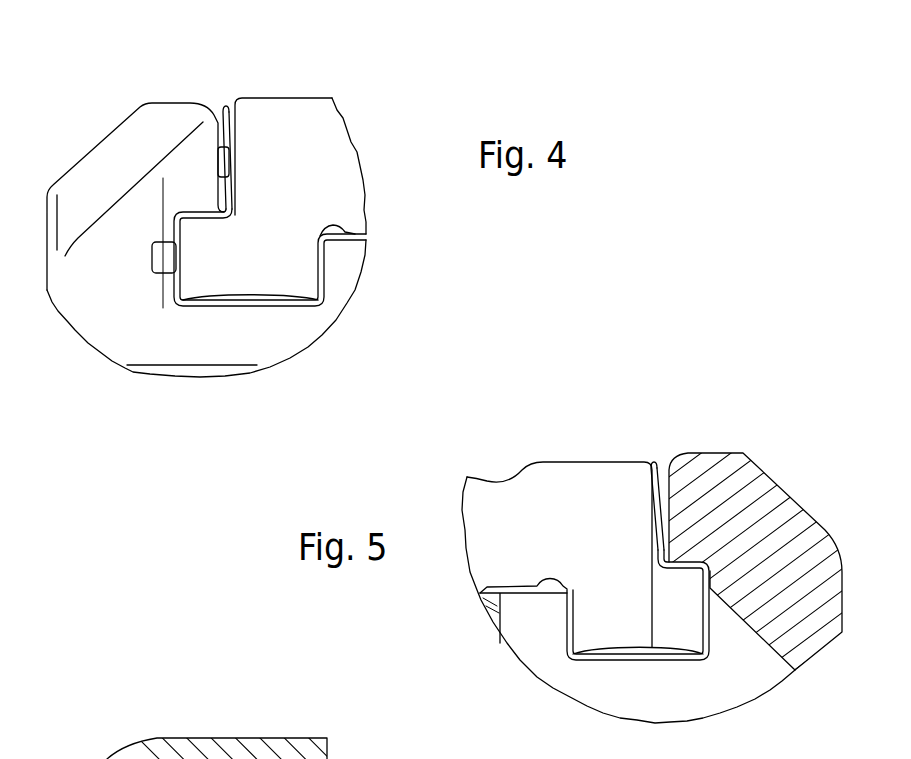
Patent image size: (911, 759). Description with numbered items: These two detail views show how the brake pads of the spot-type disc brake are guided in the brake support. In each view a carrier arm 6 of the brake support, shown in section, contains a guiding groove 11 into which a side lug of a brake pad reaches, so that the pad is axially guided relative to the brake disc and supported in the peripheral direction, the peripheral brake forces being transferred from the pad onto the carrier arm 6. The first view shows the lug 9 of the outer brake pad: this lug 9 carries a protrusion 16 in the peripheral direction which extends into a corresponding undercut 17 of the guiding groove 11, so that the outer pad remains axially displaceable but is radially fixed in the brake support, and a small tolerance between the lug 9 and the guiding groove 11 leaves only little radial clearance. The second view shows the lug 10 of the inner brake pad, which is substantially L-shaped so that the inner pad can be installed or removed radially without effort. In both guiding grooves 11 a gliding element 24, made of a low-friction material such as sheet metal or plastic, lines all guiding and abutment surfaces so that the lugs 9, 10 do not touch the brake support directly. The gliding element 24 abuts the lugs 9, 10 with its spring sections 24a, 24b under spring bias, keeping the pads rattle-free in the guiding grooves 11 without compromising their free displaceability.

In FIG. 4, the carrier arm 6 is at (88, 192).
In FIG. 5, the carrier arm 6 is at (765, 527).
In FIG. 4, the lug 9 is at (292, 179).
In FIG. 5, the lug 10 is at (601, 527).
In FIG. 4, the guiding groove 11 is at (226, 95).
In FIG. 5, the guiding groove 11 is at (687, 652).
In FIG. 4, the protrusion 16 is at (193, 263).
In FIG. 4, the undercut 17 is at (160, 230).
In FIG. 4, the gliding element 24 is at (175, 283).
In FIG. 5, the gliding element 24 is at (713, 623).
In FIG. 4, the spring section 24a is at (218, 118).
In FIG. 5, the spring section 24a is at (664, 480).
In FIG. 4, the spring section 24b is at (247, 298).
In FIG. 5, the spring section 24b is at (623, 648).